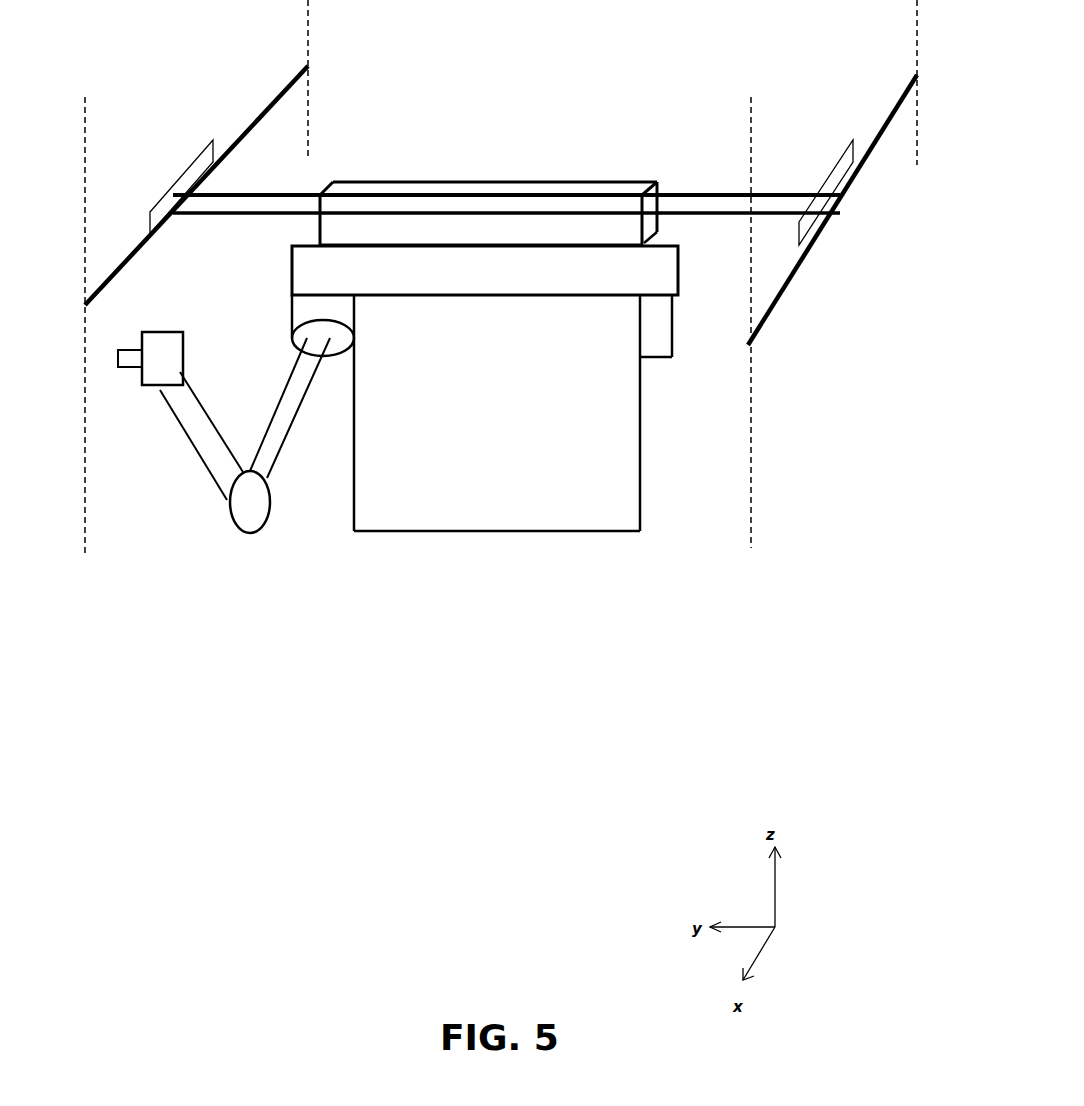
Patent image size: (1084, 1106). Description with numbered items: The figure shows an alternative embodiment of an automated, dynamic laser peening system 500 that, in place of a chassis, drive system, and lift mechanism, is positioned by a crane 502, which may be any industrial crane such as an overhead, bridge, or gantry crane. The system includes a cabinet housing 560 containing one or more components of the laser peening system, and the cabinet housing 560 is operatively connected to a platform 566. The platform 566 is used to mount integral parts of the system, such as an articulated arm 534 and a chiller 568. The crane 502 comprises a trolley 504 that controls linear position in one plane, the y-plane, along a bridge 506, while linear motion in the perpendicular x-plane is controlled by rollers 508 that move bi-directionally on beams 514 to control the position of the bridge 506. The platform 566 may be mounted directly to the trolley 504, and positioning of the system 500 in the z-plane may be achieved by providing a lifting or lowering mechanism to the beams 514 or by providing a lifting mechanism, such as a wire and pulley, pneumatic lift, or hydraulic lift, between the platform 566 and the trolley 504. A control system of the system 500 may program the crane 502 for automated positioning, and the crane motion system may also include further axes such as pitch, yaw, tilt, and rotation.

The automated, dynamic LP system 500 is at (318, 755).
The crane 502 is at (212, 78).
The trolley 504 is at (502, 195).
The bridge 506 is at (293, 200).
The rollers 508 is at (178, 183).
The beams 514 is at (277, 99).
The articulated arm 534 is at (248, 520).
The cabinet housing 560 is at (512, 512).
The platform 566 is at (662, 265).
The chiller 568 is at (657, 352).